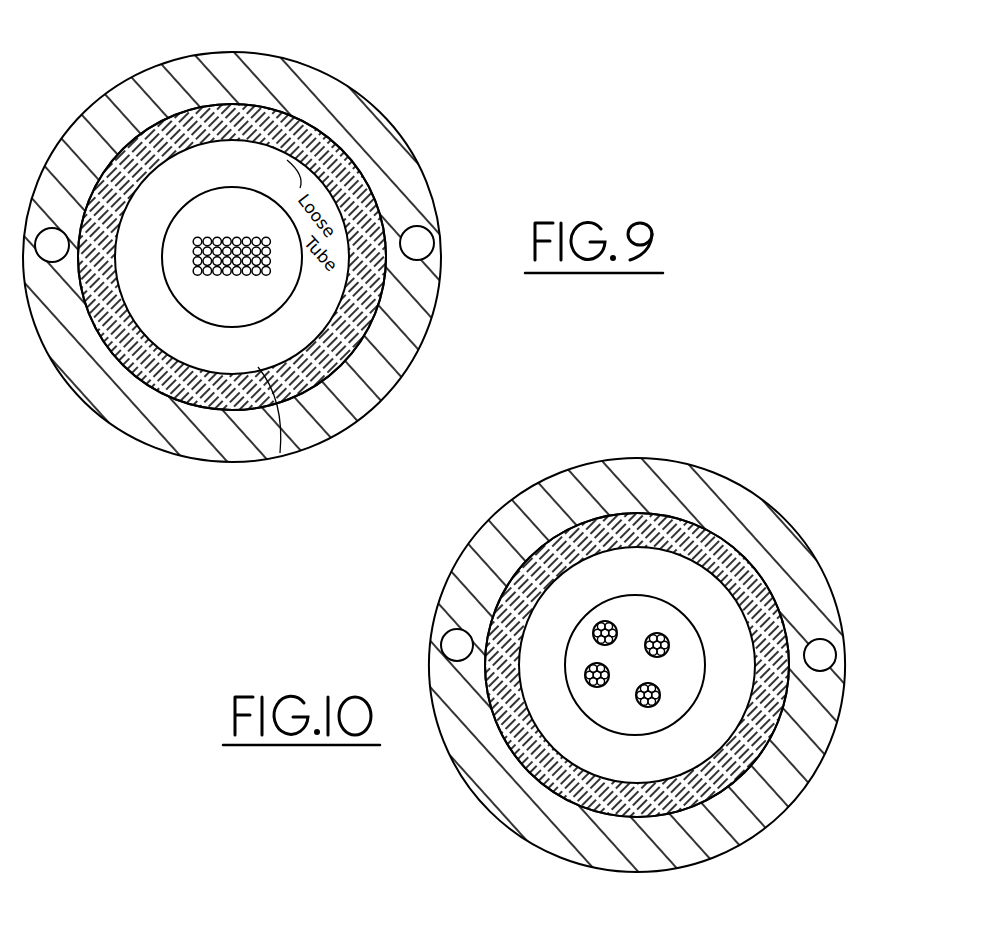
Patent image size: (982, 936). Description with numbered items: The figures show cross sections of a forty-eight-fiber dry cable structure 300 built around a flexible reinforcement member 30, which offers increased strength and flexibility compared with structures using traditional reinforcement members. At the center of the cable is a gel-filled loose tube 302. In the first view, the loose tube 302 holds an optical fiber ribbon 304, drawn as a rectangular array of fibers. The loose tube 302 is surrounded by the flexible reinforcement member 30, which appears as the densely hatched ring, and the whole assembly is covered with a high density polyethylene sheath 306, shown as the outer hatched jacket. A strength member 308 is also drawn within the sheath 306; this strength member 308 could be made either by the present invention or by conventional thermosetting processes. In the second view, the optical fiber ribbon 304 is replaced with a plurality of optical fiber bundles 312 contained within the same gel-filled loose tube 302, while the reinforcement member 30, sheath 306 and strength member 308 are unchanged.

In FIG. 9, the dry cable structure 300 is at (280, 254).
In FIG. 9, the flexible reinforcement member 30 is at (325, 128).
In FIG. 10, the flexible reinforcement member 30 is at (673, 523).
In FIG. 9, the gel-filled loose tube 302 is at (278, 202).
In FIG. 10, the gel-filled loose tube 302 is at (650, 585).
In FIG. 9, the optical fiber ribbon 304 is at (240, 277).
In FIG. 9, the high density polyethylene sheath 306 is at (400, 160).
In FIG. 10, the high density polyethylene sheath 306 is at (758, 505).
In FIG. 9, the strength member 308 is at (418, 240).
In FIG. 10, the strength member 308 is at (453, 645).
In FIG. 10, the optical fiber bundles 312 is at (648, 707).